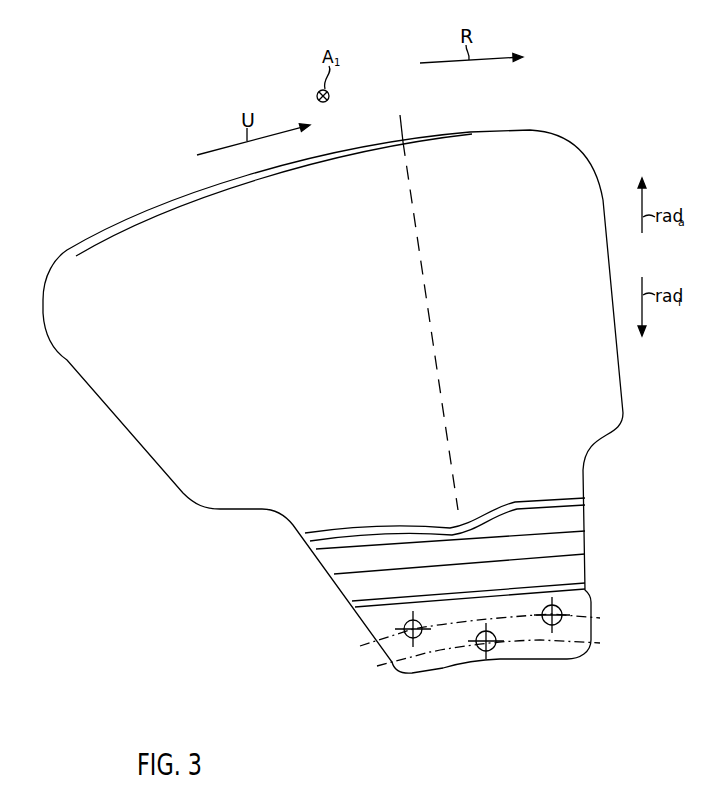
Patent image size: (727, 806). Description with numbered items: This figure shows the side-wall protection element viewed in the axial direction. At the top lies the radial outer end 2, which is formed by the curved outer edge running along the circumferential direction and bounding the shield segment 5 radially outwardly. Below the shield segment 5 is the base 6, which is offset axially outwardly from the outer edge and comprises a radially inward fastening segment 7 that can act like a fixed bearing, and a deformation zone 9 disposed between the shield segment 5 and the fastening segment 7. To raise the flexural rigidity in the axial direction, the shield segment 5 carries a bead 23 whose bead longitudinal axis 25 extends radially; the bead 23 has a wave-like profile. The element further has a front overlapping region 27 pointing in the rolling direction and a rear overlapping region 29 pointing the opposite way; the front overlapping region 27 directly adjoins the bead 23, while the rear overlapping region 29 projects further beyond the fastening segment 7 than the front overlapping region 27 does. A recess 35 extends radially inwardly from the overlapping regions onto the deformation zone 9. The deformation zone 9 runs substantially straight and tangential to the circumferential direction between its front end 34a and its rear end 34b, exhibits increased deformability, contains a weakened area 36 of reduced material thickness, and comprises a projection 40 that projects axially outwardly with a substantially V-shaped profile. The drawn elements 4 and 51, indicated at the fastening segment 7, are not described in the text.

The radial outer end 2 is at (148, 170).
The carrier plate 4 is at (610, 680).
The shield segment 5 is at (119, 484).
The base 6 is at (665, 497).
The fastening segment 7 is at (620, 583).
The deformation zone 9 is at (593, 725).
The bead 23 is at (459, 122).
The bead longitudinal axis 25 is at (404, 122).
The front overlapping region 27 is at (591, 104).
The rear overlapping region 29 is at (51, 215).
The end in the circumferential direction being in front 34a is at (601, 564).
The end in the circumferential direction being at the rear 34b is at (314, 594).
The recess 35 is at (290, 571).
The weakened area 36 is at (620, 583).
The projection 40 is at (651, 550).
The bore 51 is at (404, 626).